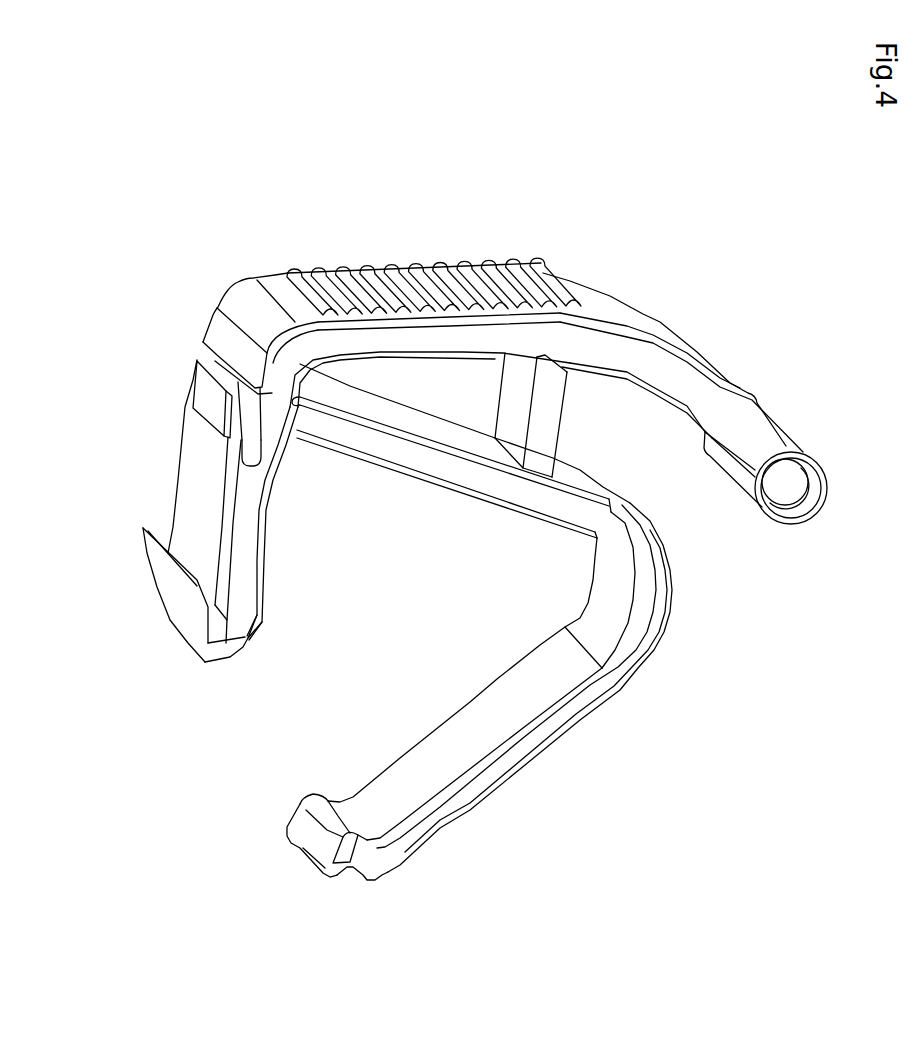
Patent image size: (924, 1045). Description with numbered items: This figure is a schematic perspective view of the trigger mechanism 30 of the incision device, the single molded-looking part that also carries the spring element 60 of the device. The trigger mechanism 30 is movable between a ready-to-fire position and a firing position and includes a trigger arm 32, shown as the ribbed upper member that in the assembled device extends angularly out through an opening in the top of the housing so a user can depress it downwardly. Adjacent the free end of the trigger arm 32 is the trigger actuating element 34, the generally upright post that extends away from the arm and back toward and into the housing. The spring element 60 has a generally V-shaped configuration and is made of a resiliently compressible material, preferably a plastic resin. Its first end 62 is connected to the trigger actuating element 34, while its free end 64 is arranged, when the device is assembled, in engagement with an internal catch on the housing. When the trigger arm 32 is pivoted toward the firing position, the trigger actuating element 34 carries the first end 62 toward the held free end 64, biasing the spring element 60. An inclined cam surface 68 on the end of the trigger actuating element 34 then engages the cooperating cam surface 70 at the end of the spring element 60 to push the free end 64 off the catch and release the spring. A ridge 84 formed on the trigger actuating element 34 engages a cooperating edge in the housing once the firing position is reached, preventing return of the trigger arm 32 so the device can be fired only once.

The trigger mechanism 30 is at (487, 228).
The trigger arm 32 is at (625, 353).
The trigger actuating element 34 is at (193, 487).
The spring element 60 is at (453, 470).
The first end 62 is at (296, 422).
The free end 64 is at (370, 867).
The inclined cam surface 68 is at (245, 640).
The cooperating cam surface 70 is at (297, 825).
The ridge 84 is at (210, 408).